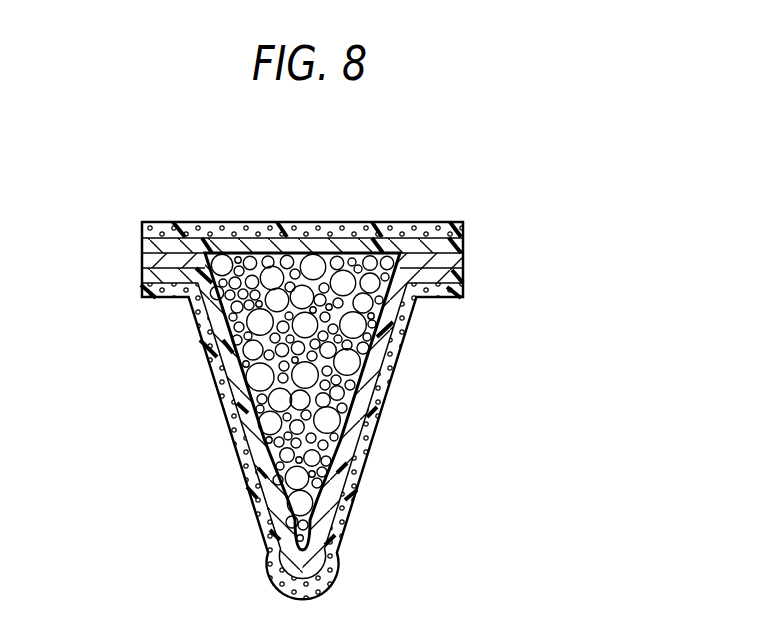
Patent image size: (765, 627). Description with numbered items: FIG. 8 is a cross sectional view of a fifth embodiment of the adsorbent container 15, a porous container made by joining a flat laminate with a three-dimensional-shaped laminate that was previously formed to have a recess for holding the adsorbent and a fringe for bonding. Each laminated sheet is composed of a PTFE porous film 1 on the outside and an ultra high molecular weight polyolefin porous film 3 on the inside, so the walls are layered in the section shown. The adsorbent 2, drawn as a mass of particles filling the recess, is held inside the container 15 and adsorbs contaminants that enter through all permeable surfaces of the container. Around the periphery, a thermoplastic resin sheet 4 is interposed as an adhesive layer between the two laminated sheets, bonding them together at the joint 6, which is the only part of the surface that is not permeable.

The heat insulating container 15 is at (250, 202).
The PTFE porous film 1 is at (459, 222).
The adsorbent 2 is at (343, 238).
The ultra high molecular weight polyolefin porous film 3 is at (463, 246).
The thermoplastic resin sheet 4 is at (143, 262).
The joint 6 is at (166, 299).